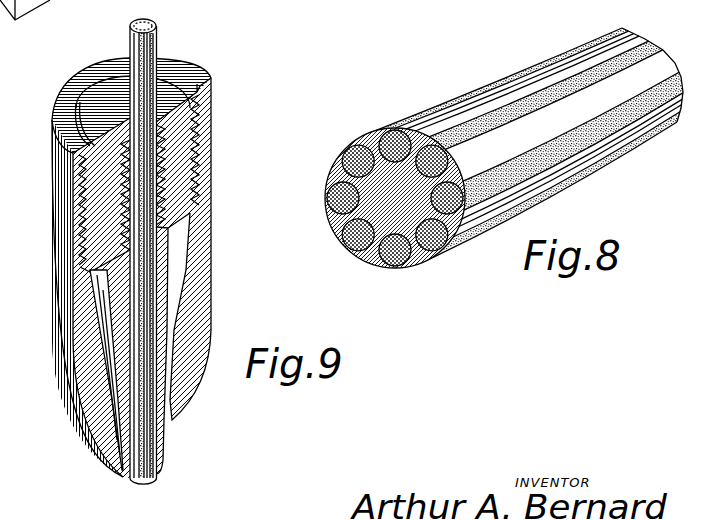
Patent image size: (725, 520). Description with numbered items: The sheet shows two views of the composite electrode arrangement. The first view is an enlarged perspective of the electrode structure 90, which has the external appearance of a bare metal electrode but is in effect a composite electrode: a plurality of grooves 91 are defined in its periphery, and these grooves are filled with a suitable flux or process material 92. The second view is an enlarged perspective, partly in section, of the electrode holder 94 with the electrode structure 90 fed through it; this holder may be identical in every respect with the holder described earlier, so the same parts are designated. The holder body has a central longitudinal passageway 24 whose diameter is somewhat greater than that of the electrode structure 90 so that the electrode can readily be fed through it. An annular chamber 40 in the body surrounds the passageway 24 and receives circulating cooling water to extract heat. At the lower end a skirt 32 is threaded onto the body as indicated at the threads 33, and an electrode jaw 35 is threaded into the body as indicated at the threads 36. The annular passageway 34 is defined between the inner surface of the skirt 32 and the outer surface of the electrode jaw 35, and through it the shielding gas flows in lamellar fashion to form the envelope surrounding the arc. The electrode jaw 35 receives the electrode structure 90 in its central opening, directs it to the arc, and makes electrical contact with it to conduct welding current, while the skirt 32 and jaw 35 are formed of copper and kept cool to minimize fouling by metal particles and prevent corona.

In FIG. 9, the central longitudinal passageway 24 is at (127, 104).
In FIG. 9, the skirt 32 is at (200, 314).
In FIG. 9, the threads 33 is at (200, 141).
In FIG. 9, the annular passageway 34 is at (181, 254).
In FIG. 9, the electrode jaw 35 is at (168, 431).
In FIG. 9, the threads 36 is at (120, 210).
In FIG. 9, the annular chamber 40 is at (77, 107).
In FIG. 9, the electrode structure 90 is at (155, 32).
In FIG. 8, the electrode structure 90 is at (426, 264).
In FIG. 8, the grooves 91 is at (375, 256).
In FIG. 8, the flux or process material 92 is at (386, 252).
In FIG. 9, the electrode holder 94 is at (212, 189).